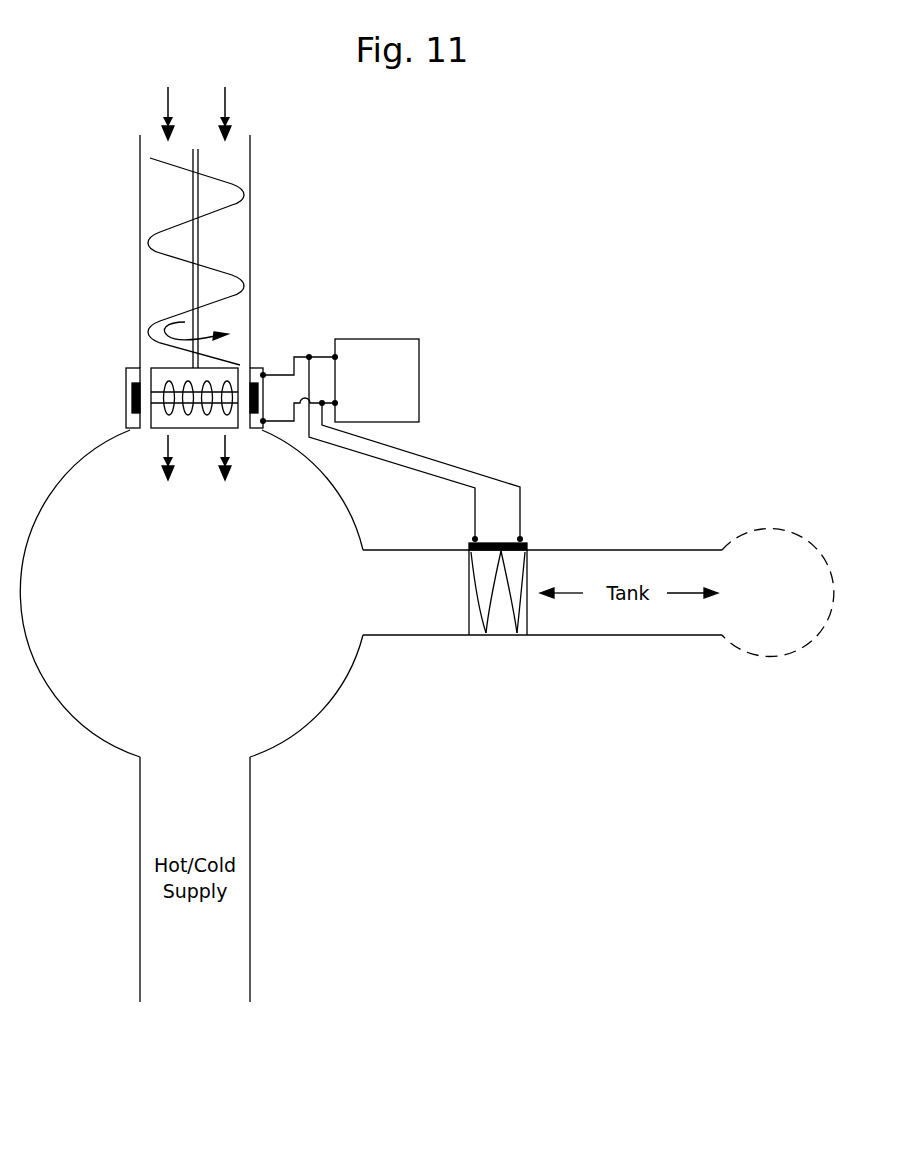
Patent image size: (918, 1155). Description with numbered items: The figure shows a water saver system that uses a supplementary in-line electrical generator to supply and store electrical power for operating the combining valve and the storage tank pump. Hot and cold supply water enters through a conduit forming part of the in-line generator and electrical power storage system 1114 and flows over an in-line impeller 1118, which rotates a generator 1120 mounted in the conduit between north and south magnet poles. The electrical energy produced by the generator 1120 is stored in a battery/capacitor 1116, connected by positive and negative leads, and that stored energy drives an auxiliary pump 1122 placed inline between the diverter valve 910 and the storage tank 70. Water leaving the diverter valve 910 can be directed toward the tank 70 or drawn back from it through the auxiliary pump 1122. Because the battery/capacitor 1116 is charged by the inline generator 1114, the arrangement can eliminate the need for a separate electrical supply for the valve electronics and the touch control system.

The in-line generator and electrical power storage system 1114 is at (257, 234).
The in-line impeller 1118 is at (163, 231).
The generator 1120 is at (165, 368).
The battery/capacitor 1116 is at (419, 383).
The diverter valve 910 is at (328, 705).
The auxiliary pump 1122 is at (502, 618).
The tank 70 is at (766, 603).